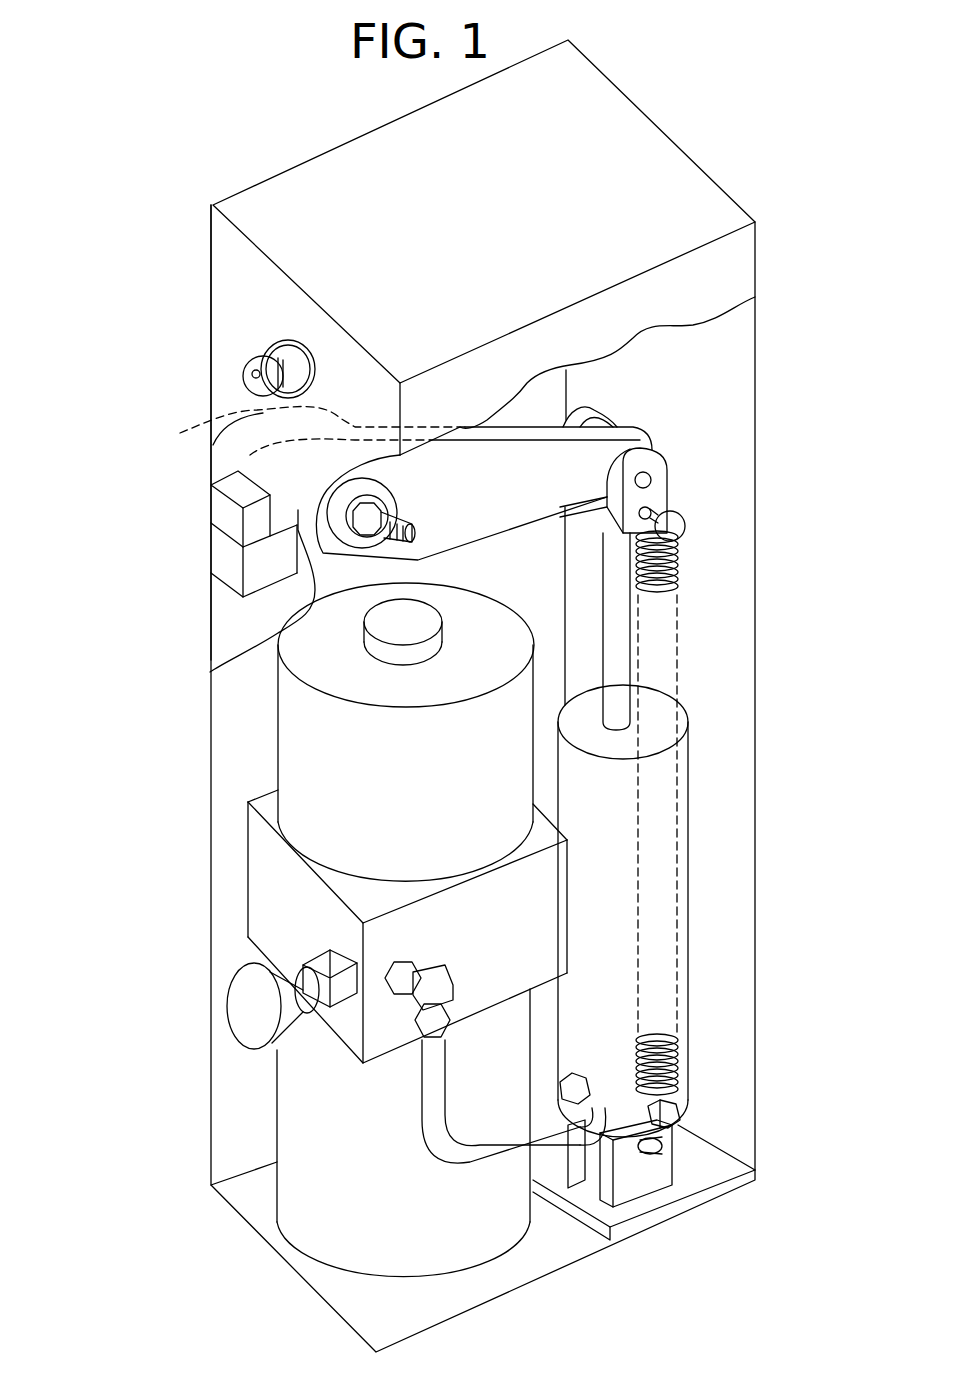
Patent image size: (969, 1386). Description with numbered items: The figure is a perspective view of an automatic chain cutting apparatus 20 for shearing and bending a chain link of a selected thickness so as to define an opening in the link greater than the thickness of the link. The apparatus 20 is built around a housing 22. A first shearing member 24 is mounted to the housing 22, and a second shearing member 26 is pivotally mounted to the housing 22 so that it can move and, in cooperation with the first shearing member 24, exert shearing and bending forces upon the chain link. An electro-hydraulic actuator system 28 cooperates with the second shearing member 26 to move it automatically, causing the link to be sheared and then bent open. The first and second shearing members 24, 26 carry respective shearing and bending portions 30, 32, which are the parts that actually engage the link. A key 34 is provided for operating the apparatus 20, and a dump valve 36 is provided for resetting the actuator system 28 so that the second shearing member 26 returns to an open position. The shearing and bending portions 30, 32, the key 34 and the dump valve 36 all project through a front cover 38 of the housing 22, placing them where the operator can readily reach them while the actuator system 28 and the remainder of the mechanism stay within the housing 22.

The cutting apparatus 20 is at (127, 118).
The housing 22 is at (322, 227).
The first shearing member 24 is at (257, 410).
The second shearing member 26 is at (357, 460).
The electro-hydraulic actuator system 28 is at (745, 937).
The shearing and bending portion 30 is at (230, 558).
The shearing and bending portion 32 is at (211, 522).
The key 34 is at (251, 355).
The dump valve 36 is at (248, 993).
The front cover 38 is at (228, 289).